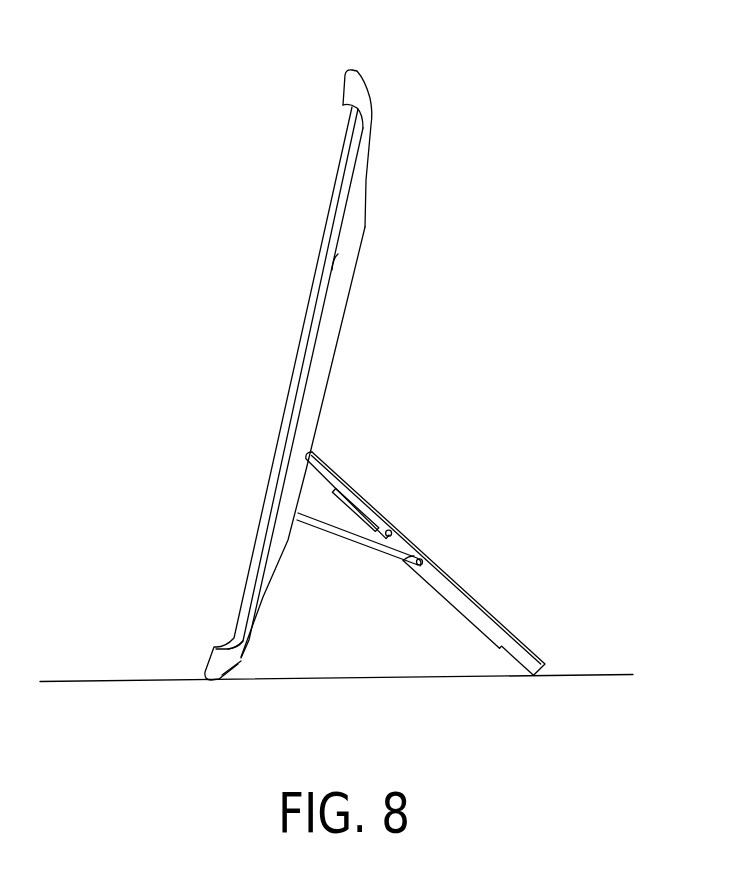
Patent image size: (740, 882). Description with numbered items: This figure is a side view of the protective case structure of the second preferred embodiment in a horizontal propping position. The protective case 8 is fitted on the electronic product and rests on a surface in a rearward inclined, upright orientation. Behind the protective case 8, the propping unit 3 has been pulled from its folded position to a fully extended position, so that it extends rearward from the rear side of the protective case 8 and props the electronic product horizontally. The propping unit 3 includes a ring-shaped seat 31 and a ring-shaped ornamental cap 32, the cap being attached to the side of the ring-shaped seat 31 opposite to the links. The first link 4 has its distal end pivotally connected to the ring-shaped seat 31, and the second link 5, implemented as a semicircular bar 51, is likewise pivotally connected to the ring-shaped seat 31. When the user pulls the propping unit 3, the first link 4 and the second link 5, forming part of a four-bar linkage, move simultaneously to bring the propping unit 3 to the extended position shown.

The propping unit 3 is at (435, 563).
The ring-shaped seat 31 is at (437, 595).
The ring-shaped ornamental cap 32 is at (485, 618).
The first link 4 is at (343, 480).
The second link 5 is at (309, 525).
The semicircular bar 51 is at (363, 545).
The protective case 8 is at (367, 88).